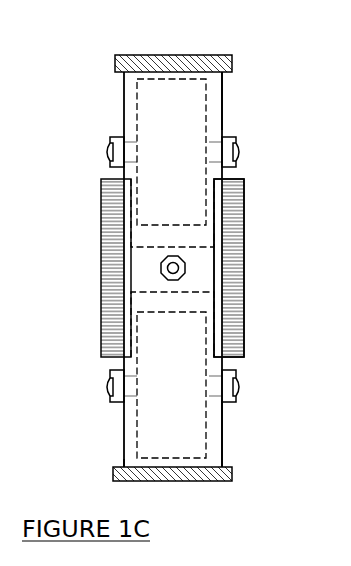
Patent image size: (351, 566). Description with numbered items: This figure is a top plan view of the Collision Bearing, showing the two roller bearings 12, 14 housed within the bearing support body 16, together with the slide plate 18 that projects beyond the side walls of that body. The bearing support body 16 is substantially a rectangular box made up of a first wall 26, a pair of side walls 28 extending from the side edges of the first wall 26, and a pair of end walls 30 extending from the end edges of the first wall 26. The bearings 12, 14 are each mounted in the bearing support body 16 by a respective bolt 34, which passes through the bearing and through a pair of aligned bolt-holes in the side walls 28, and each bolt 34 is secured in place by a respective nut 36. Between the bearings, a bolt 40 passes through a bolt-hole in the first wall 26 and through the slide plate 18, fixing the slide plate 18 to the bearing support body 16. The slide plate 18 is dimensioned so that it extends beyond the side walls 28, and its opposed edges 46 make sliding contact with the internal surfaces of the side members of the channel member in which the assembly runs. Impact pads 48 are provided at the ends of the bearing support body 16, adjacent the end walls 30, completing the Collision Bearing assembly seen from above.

The roller bearing 12 is at (155, 438).
The roller bearing 14 is at (157, 128).
The bearing support body 16 is at (223, 443).
The slide plate 18 is at (246, 335).
The first wall 26 is at (213, 107).
The side walls 28 is at (124, 90).
The end walls 30 is at (222, 72).
The bolt 34 is at (230, 154).
The nut 36 is at (116, 152).
The bolt 40 is at (189, 270).
The opposed edges 46 is at (244, 231).
The impact pads 48 is at (209, 55).